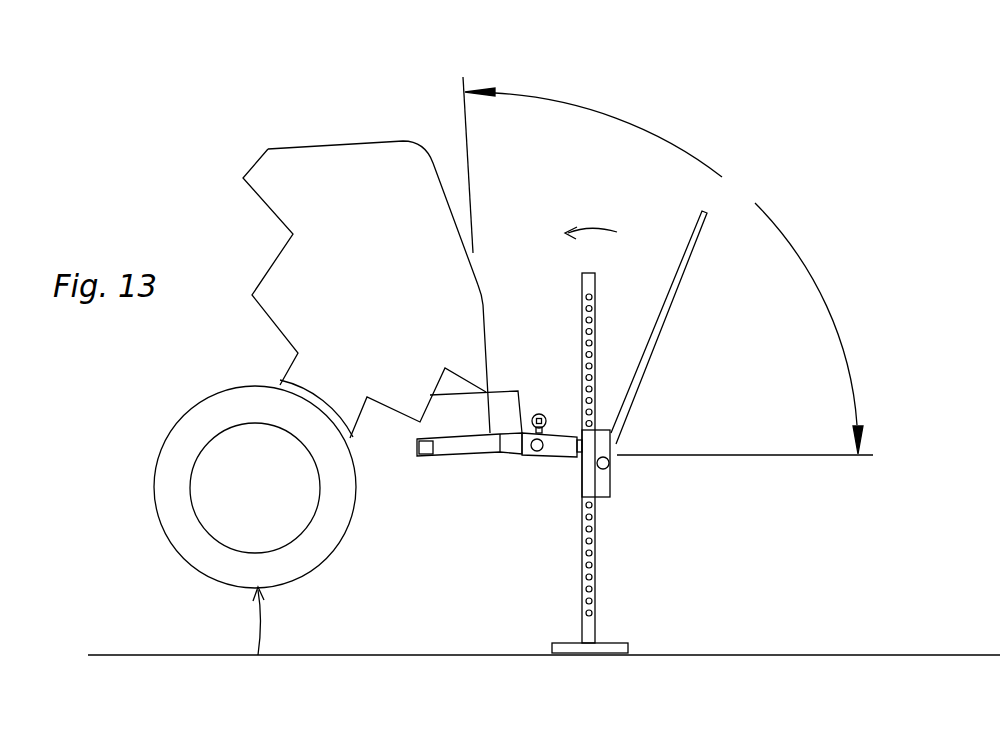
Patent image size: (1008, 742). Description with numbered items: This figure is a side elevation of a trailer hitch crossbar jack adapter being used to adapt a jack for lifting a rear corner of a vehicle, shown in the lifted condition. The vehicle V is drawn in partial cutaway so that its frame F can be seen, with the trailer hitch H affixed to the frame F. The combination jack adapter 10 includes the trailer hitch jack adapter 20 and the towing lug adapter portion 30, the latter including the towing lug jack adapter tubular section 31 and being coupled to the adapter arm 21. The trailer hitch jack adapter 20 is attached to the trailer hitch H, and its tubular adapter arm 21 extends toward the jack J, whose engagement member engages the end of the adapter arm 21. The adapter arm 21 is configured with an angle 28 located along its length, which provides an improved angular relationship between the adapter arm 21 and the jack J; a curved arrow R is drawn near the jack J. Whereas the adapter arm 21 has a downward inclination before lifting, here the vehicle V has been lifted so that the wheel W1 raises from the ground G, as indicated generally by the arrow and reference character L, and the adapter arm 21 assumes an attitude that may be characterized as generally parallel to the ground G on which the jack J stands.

The vehicle V is at (385, 156).
The wheel W1 is at (163, 478).
The lift indication arrow L is at (258, 633).
The frame F is at (417, 440).
The combination jack adapter 10 is at (538, 432).
The trailer hitch jack adapter 20 is at (446, 492).
The adapter arm 21 is at (485, 456).
The towing lug adapter portion 30 is at (608, 389).
The towing lug jack adapter tubular section 31 is at (543, 457).
The trailer hitch H is at (526, 416).
The jack J is at (590, 280).
The rotation direction R is at (590, 225).
The angle 28 is at (733, 195).
The ground G is at (668, 655).